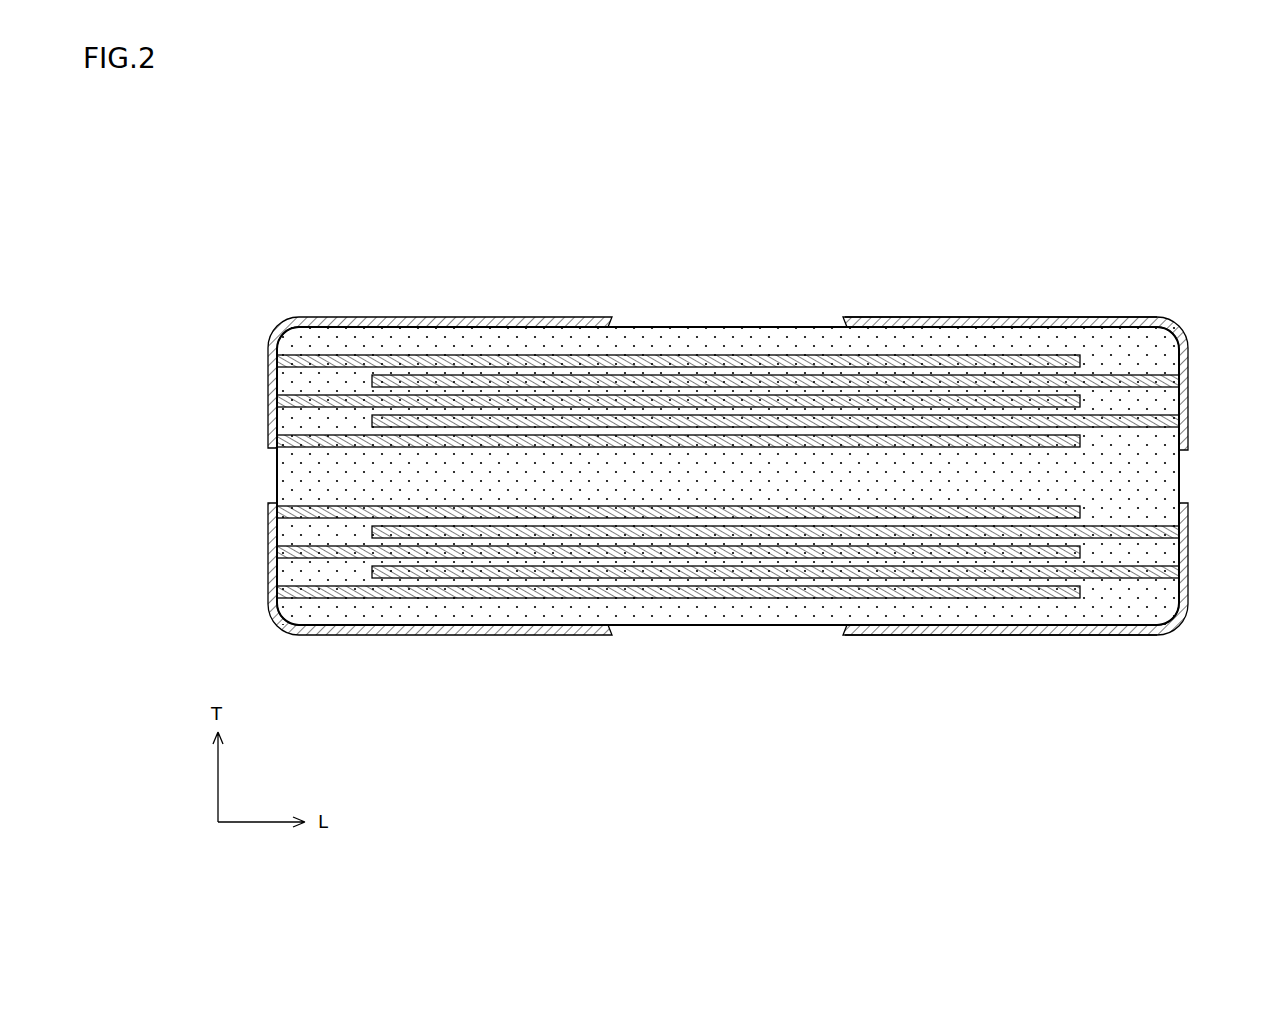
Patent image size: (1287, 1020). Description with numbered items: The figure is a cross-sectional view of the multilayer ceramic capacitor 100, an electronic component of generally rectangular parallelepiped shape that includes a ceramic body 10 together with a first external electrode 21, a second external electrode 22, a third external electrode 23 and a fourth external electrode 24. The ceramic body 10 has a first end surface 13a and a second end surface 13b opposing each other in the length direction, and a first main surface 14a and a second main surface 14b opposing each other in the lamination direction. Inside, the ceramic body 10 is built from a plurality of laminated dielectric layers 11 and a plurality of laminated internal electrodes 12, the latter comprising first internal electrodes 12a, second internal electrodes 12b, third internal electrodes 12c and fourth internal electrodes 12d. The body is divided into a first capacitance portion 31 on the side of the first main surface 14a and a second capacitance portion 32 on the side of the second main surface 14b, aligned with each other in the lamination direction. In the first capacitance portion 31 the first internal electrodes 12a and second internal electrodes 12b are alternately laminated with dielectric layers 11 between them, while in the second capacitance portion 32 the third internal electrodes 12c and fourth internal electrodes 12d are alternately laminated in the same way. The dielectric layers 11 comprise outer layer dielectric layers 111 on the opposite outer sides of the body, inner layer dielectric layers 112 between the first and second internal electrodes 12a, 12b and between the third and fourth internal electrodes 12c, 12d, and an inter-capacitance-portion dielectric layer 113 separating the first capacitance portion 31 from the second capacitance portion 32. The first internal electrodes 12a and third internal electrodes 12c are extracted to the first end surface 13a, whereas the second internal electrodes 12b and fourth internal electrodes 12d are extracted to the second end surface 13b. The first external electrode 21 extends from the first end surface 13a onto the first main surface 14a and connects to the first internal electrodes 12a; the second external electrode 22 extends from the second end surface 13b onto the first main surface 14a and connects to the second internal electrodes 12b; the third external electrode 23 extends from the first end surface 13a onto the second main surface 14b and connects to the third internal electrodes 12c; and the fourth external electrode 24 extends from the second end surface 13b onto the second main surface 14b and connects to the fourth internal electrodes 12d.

The multilayer ceramic capacitor 100 is at (568, 211).
The ceramic body 10 is at (787, 326).
The dielectric layers 11 is at (728, 466).
The outer layer dielectric layers 111 is at (920, 345).
The inner layer dielectric layers 112 is at (598, 412).
The inter-capacitance-portion dielectric layer 113 is at (675, 487).
The internal electrodes 12 is at (728, 463).
The first internal electrodes 12a is at (357, 395).
The second internal electrodes 12b is at (1138, 417).
The third internal electrodes 12c is at (327, 557).
The fourth internal electrodes 12d is at (1133, 538).
The first end surface 13a is at (276, 470).
The second end surface 13b is at (1180, 472).
The first main surface 14a is at (718, 326).
The second main surface 14b is at (688, 627).
The first external electrode 21 is at (310, 318).
The second external electrode 22 is at (1160, 318).
The third external electrode 23 is at (430, 636).
The fourth external electrode 24 is at (1135, 636).
The first capacitance portion 31 is at (988, 326).
The second capacitance portion 32 is at (1010, 604).